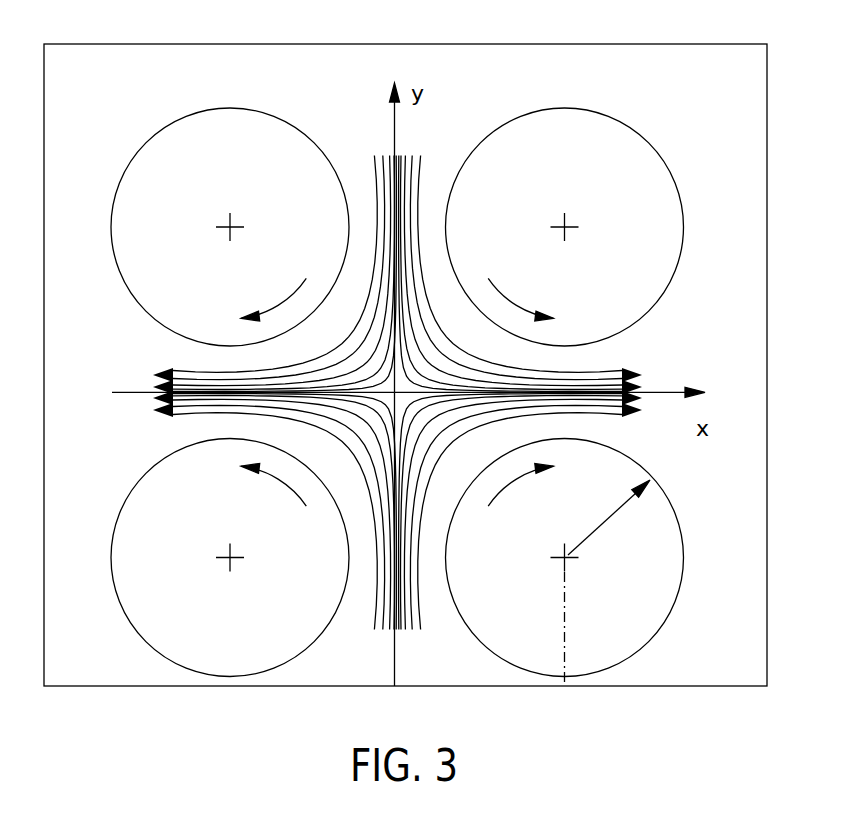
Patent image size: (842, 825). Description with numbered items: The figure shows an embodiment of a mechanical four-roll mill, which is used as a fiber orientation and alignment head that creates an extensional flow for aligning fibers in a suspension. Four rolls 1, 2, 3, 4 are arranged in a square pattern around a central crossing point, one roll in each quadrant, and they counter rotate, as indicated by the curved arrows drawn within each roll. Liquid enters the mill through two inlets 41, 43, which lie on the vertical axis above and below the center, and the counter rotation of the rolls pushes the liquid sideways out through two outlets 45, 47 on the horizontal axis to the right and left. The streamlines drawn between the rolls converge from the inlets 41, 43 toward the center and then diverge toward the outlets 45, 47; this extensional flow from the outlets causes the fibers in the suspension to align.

The roll 1 is at (565, 227).
The roll 2 is at (230, 227).
The roll 3 is at (230, 558).
The roll 4 is at (565, 563).
The inlet 41 is at (390, 128).
The inlet 43 is at (393, 661).
The outlet 45 is at (670, 388).
The outlet 47 is at (133, 392).